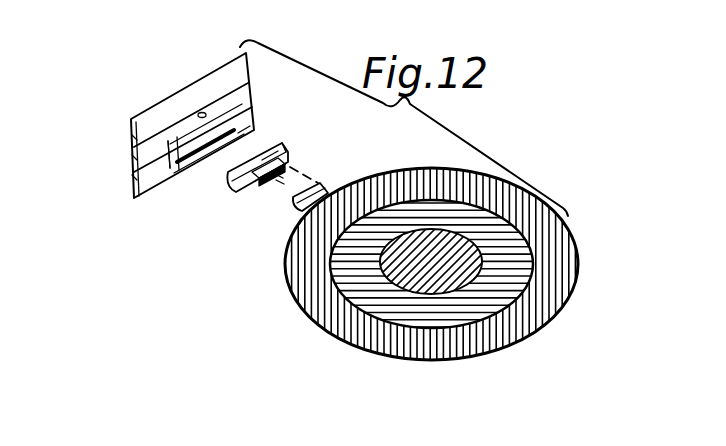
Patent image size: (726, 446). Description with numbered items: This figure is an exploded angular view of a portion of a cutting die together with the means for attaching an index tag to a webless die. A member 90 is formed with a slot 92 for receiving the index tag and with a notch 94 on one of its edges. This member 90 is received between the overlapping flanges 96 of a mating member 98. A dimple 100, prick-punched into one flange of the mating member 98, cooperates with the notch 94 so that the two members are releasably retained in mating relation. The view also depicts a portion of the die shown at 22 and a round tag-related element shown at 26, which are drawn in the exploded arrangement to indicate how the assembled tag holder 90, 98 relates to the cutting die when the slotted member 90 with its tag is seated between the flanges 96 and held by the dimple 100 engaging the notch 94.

The guide block 22 is at (145, 127).
The disc 26 is at (285, 265).
The member 90 is at (228, 181).
The slot 92 is at (264, 186).
The notch 94 is at (262, 160).
The overlapping flanges 96 is at (238, 133).
The mating member 98 is at (168, 148).
The dimple 100 is at (201, 113).